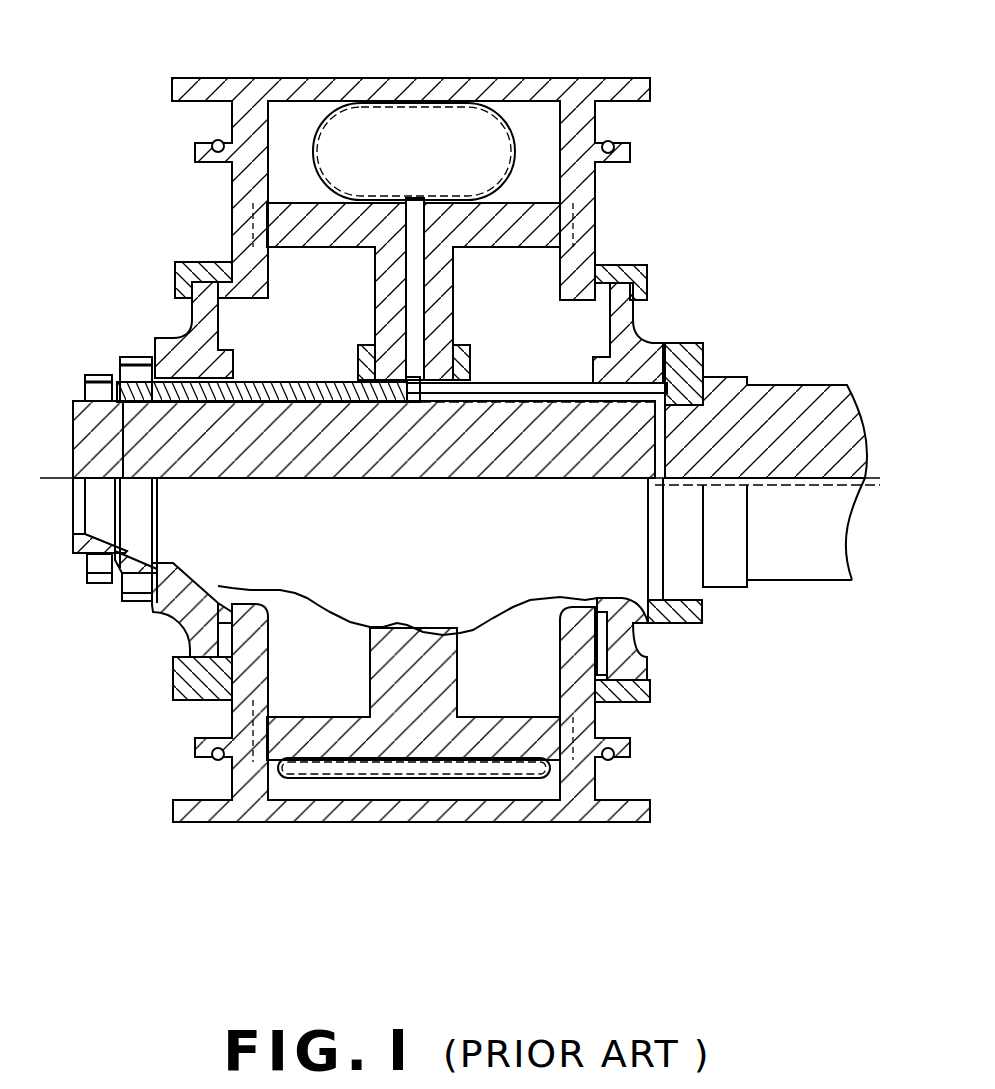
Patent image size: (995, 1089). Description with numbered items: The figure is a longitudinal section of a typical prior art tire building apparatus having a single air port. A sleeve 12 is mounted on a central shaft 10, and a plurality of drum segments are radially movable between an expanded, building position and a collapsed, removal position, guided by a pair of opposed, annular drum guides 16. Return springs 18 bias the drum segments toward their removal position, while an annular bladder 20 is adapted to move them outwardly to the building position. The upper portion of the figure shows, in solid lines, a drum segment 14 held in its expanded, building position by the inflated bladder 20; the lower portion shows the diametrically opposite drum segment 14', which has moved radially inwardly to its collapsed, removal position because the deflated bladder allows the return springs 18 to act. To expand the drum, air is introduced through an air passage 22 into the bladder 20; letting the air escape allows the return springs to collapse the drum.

The central shaft 10 is at (792, 567).
The sleeve 12 is at (155, 363).
The drum segment 14 is at (413, 152).
The drum segment 14' is at (411, 751).
The drum guide 16 is at (188, 322).
The return spring 18 is at (210, 143).
The annular bladder 20 is at (512, 122).
The air passage 22 is at (420, 323).